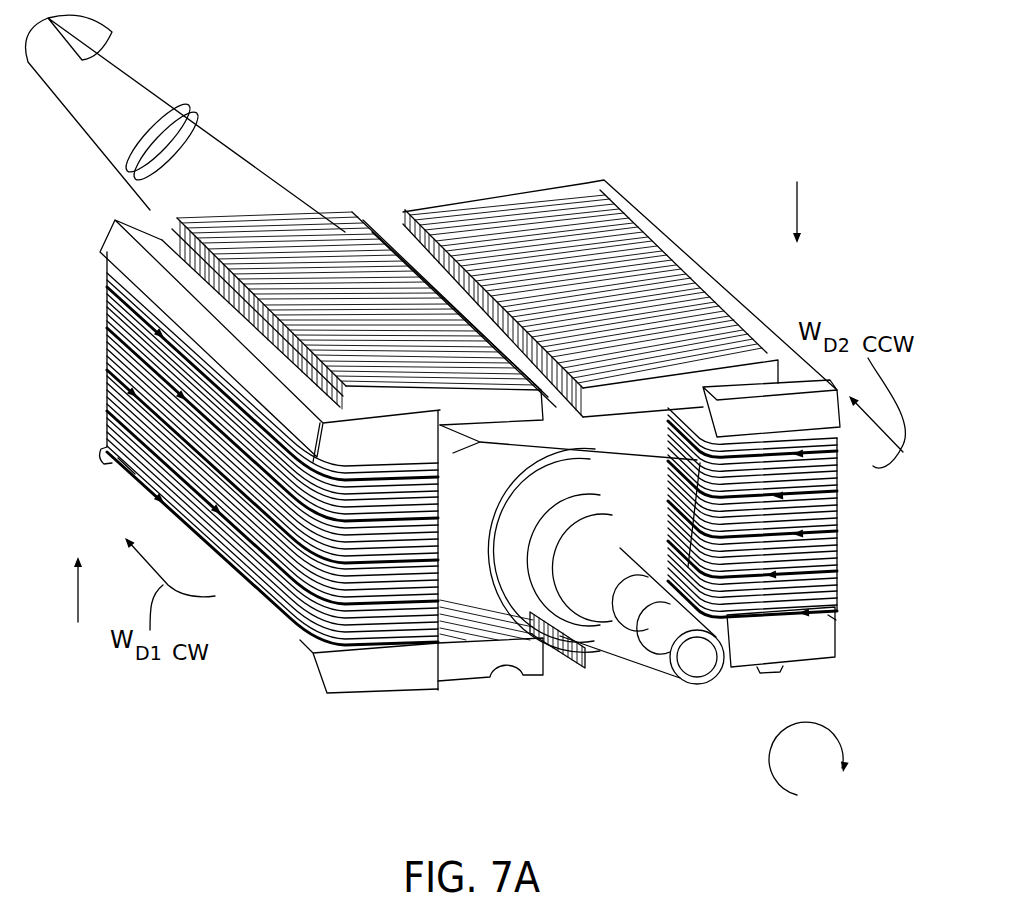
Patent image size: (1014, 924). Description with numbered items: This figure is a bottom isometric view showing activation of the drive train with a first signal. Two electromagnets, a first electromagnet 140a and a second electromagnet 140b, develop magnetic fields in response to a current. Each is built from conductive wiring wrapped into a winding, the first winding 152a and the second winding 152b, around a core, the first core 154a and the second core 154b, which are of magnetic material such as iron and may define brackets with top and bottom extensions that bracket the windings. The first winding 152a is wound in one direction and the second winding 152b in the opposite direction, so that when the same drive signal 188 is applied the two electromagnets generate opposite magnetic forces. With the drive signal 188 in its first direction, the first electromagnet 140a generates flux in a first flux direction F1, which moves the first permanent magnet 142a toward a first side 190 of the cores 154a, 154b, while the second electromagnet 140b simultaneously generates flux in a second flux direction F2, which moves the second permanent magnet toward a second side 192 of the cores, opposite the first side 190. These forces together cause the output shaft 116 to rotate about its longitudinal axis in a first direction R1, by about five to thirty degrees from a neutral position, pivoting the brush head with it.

The output shaft 116 is at (229, 162).
The first electromagnet 140a is at (229, 484).
The second electromagnet 140b is at (790, 521).
The first permanent magnet 142a is at (440, 476).
The first winding 152a is at (288, 597).
The second winding 152b is at (890, 604).
The first core 154a is at (290, 275).
The second core 154b is at (546, 226).
The drive signal 188 is at (127, 460).
The first side 190 is at (389, 213).
The second side 192 is at (558, 657).
The first flux direction F1 is at (77, 594).
The second flux direction F2 is at (797, 206).
The first direction R1 is at (773, 753).